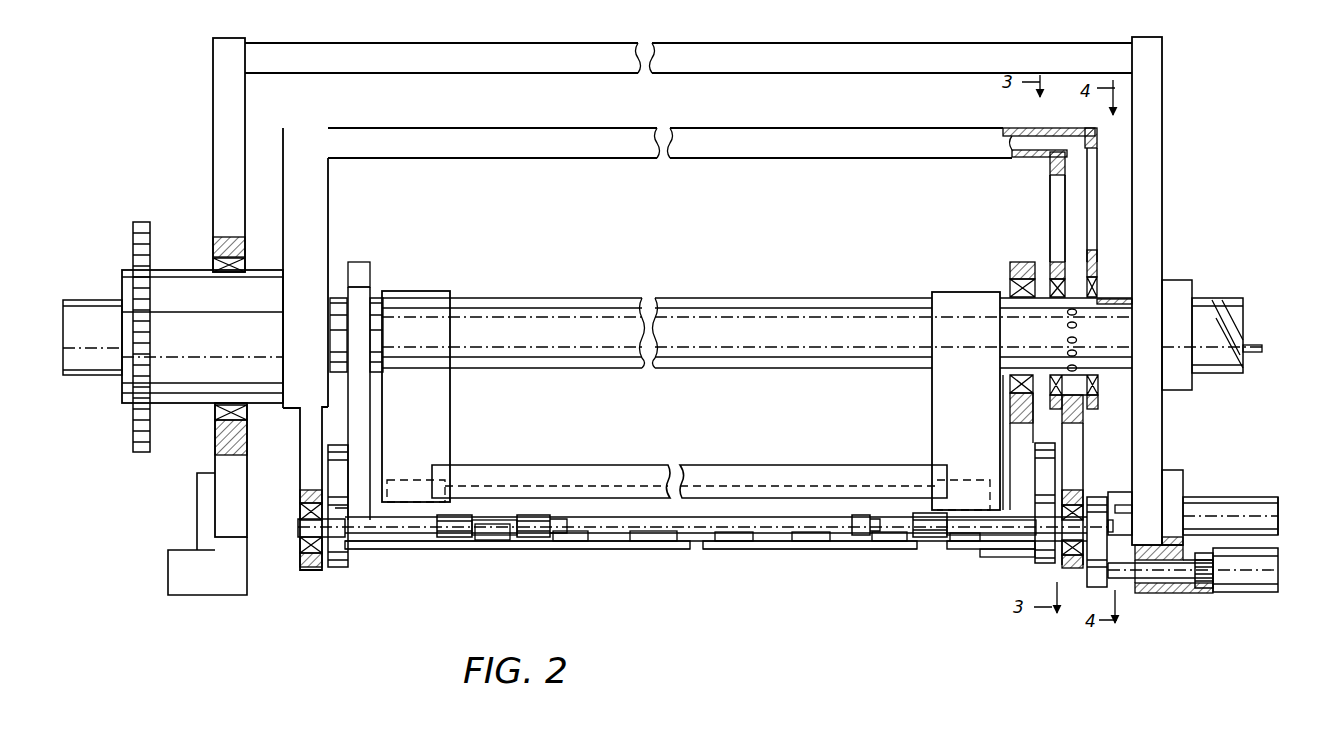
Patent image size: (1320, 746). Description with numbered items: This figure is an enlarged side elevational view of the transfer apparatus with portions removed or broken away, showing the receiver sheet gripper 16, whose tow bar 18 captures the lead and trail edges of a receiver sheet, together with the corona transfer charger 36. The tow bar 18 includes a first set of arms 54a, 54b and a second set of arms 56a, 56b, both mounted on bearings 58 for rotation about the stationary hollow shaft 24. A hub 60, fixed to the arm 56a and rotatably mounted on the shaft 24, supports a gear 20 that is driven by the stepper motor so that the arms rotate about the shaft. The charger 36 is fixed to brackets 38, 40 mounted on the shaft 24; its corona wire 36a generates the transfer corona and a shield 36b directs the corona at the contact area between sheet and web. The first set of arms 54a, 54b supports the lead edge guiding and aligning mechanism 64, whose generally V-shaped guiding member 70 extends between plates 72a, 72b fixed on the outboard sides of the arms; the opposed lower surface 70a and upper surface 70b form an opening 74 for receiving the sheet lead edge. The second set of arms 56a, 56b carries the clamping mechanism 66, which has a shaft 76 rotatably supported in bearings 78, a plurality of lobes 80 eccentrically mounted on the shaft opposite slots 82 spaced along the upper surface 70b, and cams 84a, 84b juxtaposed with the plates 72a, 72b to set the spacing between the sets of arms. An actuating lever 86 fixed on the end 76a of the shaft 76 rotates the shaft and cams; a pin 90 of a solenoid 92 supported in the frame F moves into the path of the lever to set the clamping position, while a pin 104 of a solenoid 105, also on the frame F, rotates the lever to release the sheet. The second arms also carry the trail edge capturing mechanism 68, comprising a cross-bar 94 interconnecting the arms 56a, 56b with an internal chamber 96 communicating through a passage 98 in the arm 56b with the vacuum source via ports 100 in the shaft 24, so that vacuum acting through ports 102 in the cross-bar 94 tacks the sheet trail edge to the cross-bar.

The receiver sheet gripper 16 is at (1090, 458).
The tow bar 18 is at (1086, 434).
The gear 20 is at (143, 222).
The stationary hollow shaft 24 is at (80, 298).
The corona transfer charger 36 is at (690, 465).
The corona wire 36a is at (483, 490).
The shield 36b is at (632, 480).
The bracket 38 is at (455, 388).
The bracket 40 is at (932, 378).
The first arm 54a is at (370, 263).
The first arm 54b is at (1012, 262).
The second arm 56a is at (328, 205).
The second arm 56b is at (1050, 207).
The bearings 58 is at (1010, 290).
The hub 60 is at (178, 272).
The lead edge guiding and aligning mechanism 64 is at (735, 565).
The clamping mechanism 66 is at (913, 545).
The trail edge capturing mechanism 68 is at (875, 122).
The guiding member 70 is at (812, 552).
The lower surface 70a is at (605, 549).
The upper surface 70b is at (573, 528).
The plate 72a is at (328, 445).
The plate 72b is at (1035, 443).
The opening 74 is at (655, 549).
The shaft 76 is at (298, 526).
The shaft end 76a is at (1132, 507).
The bearings 78 is at (300, 505).
The lobes 80 is at (450, 540).
The slots 82 is at (850, 528).
The cam 84a is at (1035, 556).
The cam 84b is at (358, 508).
The actuating lever 86 is at (1112, 498).
The pin 90 is at (1123, 580).
The solenoid 92 is at (1239, 590).
The cross-bar 94 is at (757, 128).
The internal chamber 96 is at (1028, 130).
The passage 98 is at (1090, 148).
The ports 100 is at (1061, 368).
The ports 102 is at (1003, 129).
The pin 104 is at (1212, 500).
The solenoid 105 is at (1270, 497).
The frame F is at (1162, 158).